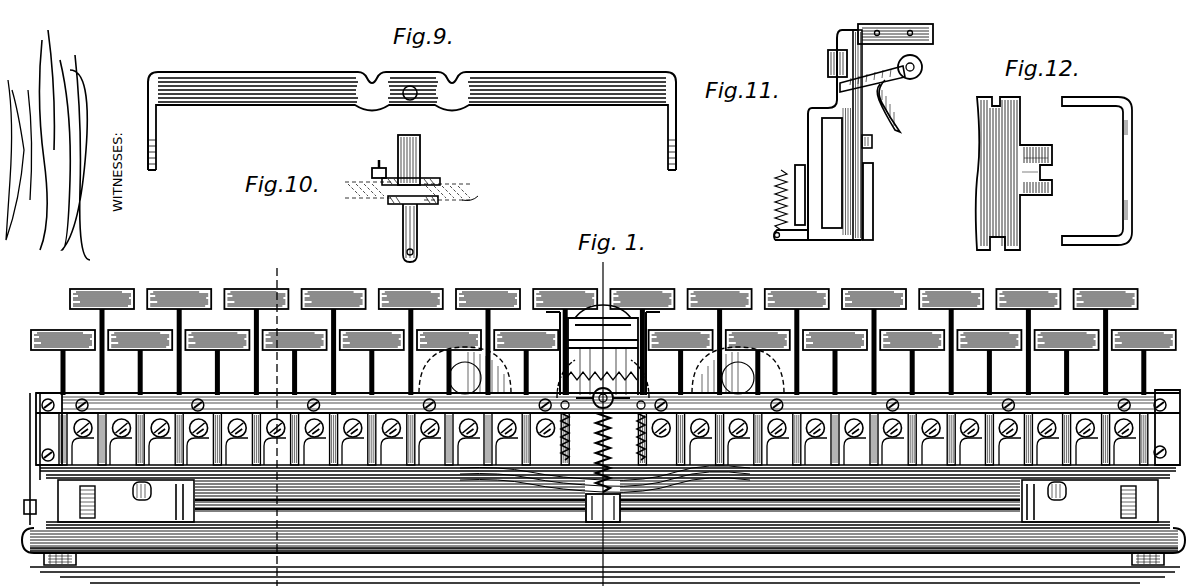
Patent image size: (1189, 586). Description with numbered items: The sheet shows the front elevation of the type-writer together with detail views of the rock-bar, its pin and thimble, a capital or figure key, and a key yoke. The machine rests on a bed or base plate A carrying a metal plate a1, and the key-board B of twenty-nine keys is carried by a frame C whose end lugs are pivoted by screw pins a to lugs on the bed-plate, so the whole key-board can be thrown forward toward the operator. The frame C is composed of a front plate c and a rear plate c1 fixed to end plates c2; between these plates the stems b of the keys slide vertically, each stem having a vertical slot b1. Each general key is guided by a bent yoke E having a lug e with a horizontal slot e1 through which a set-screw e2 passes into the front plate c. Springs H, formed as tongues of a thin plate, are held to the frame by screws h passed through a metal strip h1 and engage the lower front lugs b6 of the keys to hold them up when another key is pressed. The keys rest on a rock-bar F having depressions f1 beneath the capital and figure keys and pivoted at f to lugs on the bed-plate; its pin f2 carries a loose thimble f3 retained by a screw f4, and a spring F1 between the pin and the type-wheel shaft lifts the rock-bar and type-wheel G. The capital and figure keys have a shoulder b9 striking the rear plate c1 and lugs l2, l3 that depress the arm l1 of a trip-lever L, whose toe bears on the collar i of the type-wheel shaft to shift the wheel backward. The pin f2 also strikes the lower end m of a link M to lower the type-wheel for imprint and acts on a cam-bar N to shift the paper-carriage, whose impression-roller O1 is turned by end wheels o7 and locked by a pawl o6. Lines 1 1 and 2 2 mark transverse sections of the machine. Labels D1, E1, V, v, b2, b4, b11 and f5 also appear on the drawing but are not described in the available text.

In FIG. 1, the section line 1 is at (603, 268).
In FIG. 1, the section line 2 is at (276, 419).
In FIG. 1, the key-board B is at (160, 284).
In FIG. 11, the key stems b is at (835, 135).
In FIG. 1, the key stems b is at (176, 368).
In FIG. 1, the key-board frame C is at (62, 434).
In FIG. 1, the side frame D1 is at (30, 428).
In FIG. 1, the screws h is at (610, 404).
In FIG. 1, the metal strip h1 is at (296, 418).
In FIG. 1, the set-screw e2 is at (160, 420).
In FIG. 12, the bent yoke E is at (1010, 178).
In FIG. 1, the bent yoke E is at (603, 439).
In FIG. 1, the key lever arms E1 is at (507, 451).
In FIG. 1, the springs H is at (220, 446).
In FIG. 9, the rock-bar F is at (262, 64).
In FIG. 1, the rock-bar F is at (603, 350).
In FIG. 11, the lug l2 is at (830, 56).
In FIG. 1, the lug l2 is at (558, 316).
In FIG. 1, the lug l3 is at (650, 326).
In FIG. 1, the type-wheel G is at (640, 350).
In FIG. 11, the trip-lever L is at (920, 95).
In FIG. 1, the trip-lever L is at (603, 401).
In FIG. 1, the disk V is at (436, 372).
In FIG. 1, the hub v is at (601, 378).
In FIG. 1, the end plates c2 is at (594, 452).
In FIG. 1, the springs b2 is at (601, 430).
In FIG. 1, the spring F1 is at (235, 486).
In FIG. 1, the rock-bar pivots f is at (62, 508).
In FIG. 1, the end wheels o7 is at (140, 498).
In FIG. 1, the impression-roller O1 is at (607, 495).
In FIG. 1, the link M is at (603, 504).
In FIG. 9, the depressions f1 is at (372, 76).
In FIG. 1, the depressions f1 is at (548, 494).
In FIG. 1, the screw pins a is at (24, 500).
In FIG. 1, the bed-plate A is at (603, 552).
In FIG. 1, the pin b4 is at (200, 522).
In FIG. 1, the metal plate a1 is at (1004, 522).
In FIG. 1, the cam-bar N is at (586, 512).
In FIG. 1, the pawl o6 is at (603, 522).
In FIG. 1, the lower end of link m is at (618, 516).
In FIG. 1, the collar i is at (1185, 443).
In FIG. 10, the rock-bar pin f2 is at (418, 138).
In FIG. 10, the thimble f3 is at (424, 170).
In FIG. 10, the screw f4 is at (376, 168).
In FIG. 10, the plate f5 is at (490, 216).
In FIG. 11, the vertical slot b1 is at (832, 173).
In FIG. 11, the lower front lugs b6 is at (800, 246).
In FIG. 11, the shoulder b9 is at (874, 141).
In FIG. 11, the spring b11 is at (772, 200).
In FIG. 11, the front plate c is at (798, 166).
In FIG. 11, the rear plate c1 is at (874, 186).
In FIG. 11, the trip-lever arm l1 is at (868, 70).
In FIG. 12, the yoke lug e is at (1036, 155).
In FIG. 12, the horizontal slot e1 is at (1042, 176).